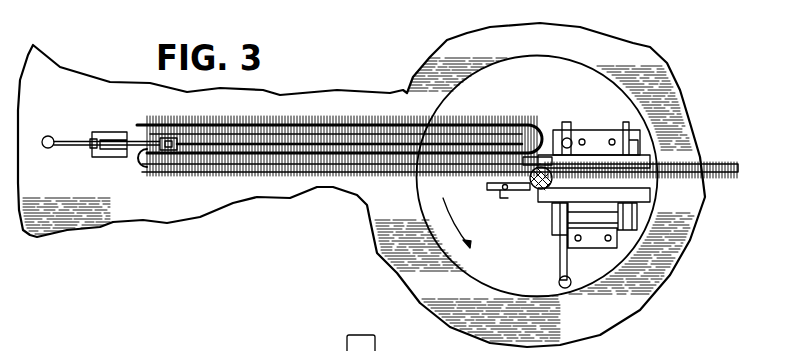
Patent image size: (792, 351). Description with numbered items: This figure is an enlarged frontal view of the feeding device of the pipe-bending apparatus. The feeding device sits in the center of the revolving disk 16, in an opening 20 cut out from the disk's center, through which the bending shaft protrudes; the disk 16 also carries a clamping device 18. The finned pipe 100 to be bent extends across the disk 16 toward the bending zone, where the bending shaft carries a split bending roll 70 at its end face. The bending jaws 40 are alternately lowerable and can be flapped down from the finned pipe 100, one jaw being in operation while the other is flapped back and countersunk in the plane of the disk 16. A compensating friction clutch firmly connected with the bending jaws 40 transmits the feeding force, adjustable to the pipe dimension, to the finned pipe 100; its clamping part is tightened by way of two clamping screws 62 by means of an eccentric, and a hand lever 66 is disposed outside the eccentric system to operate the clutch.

The revolving disk 16 is at (144, 218).
The clamping device 18 is at (108, 157).
The opening 20 is at (601, 73).
The bending jaw 40 is at (590, 157).
The clamping screws 62 is at (612, 139).
The hand lever 66 is at (565, 124).
The split bending roll 70 is at (535, 190).
The finned pipe 100 is at (222, 160).